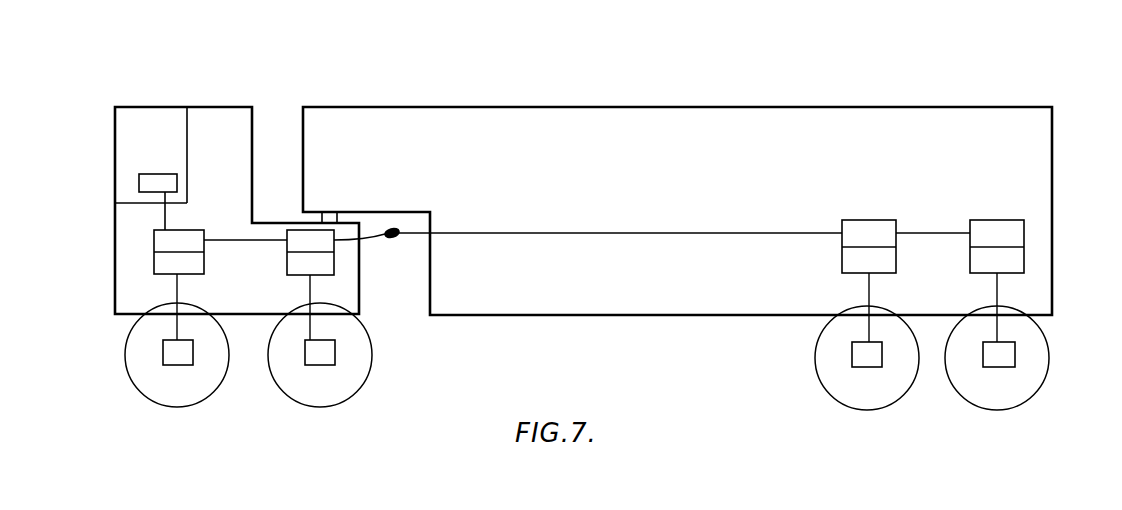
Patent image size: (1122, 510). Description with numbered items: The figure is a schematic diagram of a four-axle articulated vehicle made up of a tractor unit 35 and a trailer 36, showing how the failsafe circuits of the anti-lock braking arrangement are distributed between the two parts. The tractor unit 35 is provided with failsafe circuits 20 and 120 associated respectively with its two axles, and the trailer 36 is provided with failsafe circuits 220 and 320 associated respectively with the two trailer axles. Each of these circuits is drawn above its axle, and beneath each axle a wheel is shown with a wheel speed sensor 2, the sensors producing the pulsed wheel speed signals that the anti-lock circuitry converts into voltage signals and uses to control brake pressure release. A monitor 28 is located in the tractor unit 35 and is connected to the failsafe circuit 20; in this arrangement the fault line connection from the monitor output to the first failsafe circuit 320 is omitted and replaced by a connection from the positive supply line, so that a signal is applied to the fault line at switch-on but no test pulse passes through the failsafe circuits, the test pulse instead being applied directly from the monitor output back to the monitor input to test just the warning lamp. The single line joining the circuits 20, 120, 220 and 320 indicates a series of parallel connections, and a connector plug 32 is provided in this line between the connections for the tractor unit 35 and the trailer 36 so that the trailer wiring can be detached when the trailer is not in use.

The tractor unit 35 is at (222, 94).
The trailer 36 is at (578, 94).
The monitor 28 is at (139, 180).
The failsafe circuit 20 is at (179, 285).
The failsafe circuit 120 is at (269, 285).
The failsafe circuit 220 is at (869, 281).
The failsafe circuit 320 is at (960, 281).
The connector plug 32 is at (390, 241).
The wheel speed sensor 2 is at (163, 352).